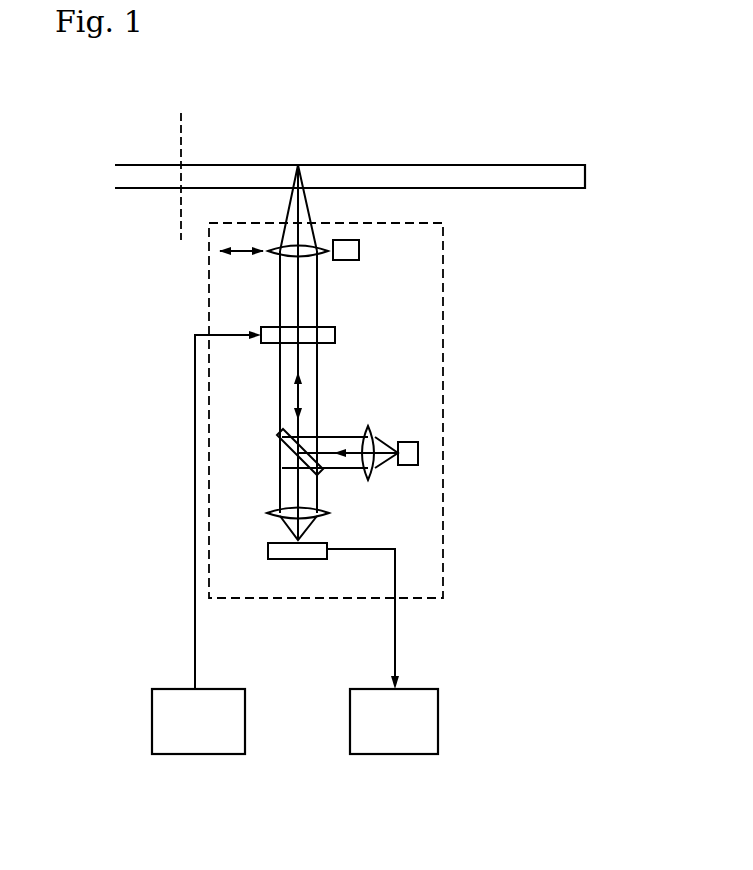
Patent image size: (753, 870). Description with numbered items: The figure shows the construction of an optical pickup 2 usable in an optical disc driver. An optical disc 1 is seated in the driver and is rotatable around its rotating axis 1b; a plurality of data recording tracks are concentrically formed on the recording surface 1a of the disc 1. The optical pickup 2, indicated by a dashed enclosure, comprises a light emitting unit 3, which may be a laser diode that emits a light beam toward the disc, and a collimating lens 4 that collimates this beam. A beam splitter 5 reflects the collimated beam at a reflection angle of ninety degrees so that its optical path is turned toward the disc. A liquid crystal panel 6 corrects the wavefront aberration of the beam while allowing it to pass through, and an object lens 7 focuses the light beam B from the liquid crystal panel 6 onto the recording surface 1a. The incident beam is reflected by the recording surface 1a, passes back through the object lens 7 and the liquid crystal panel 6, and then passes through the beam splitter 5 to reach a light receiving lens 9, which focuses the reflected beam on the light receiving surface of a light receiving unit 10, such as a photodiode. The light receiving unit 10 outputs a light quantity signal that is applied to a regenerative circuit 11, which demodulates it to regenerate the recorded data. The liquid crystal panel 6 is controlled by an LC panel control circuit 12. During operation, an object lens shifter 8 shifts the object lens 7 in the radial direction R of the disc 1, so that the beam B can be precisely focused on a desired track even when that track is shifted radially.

The optical disc 1 is at (585, 174).
The recording surface 1a is at (504, 169).
The rotating axis 1b is at (190, 129).
The optical pickup 2 is at (443, 401).
The light emitting unit 3 is at (406, 442).
The collimating lens 4 is at (363, 428).
The beam splitter 5 is at (278, 437).
The liquid crystal panel 6 is at (335, 335).
The object lens 7 is at (315, 258).
The object lens shifter 8 is at (359, 250).
The light receiving lens 9 is at (328, 508).
The light receiving unit 10 is at (318, 559).
The regenerative circuit 11 is at (415, 754).
The LC panel control circuit 12 is at (217, 754).
The light beam B is at (312, 205).
The radial direction R is at (243, 256).